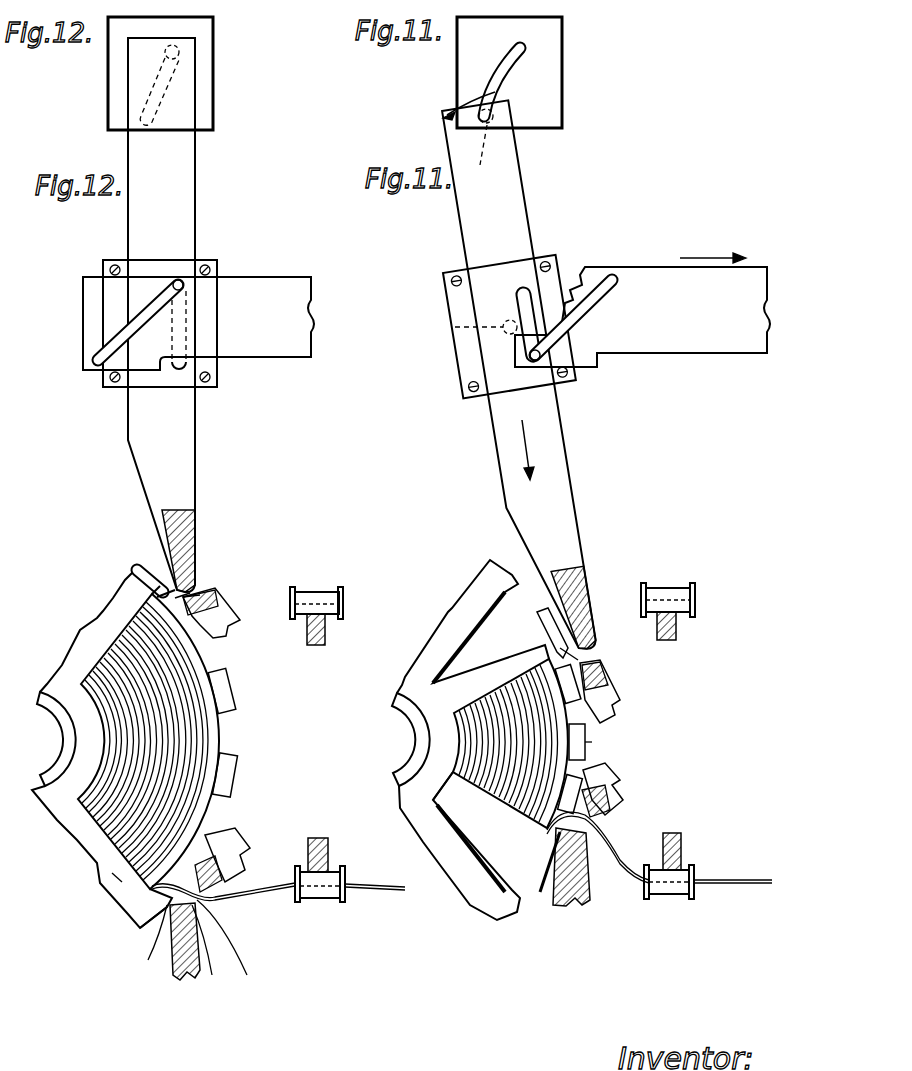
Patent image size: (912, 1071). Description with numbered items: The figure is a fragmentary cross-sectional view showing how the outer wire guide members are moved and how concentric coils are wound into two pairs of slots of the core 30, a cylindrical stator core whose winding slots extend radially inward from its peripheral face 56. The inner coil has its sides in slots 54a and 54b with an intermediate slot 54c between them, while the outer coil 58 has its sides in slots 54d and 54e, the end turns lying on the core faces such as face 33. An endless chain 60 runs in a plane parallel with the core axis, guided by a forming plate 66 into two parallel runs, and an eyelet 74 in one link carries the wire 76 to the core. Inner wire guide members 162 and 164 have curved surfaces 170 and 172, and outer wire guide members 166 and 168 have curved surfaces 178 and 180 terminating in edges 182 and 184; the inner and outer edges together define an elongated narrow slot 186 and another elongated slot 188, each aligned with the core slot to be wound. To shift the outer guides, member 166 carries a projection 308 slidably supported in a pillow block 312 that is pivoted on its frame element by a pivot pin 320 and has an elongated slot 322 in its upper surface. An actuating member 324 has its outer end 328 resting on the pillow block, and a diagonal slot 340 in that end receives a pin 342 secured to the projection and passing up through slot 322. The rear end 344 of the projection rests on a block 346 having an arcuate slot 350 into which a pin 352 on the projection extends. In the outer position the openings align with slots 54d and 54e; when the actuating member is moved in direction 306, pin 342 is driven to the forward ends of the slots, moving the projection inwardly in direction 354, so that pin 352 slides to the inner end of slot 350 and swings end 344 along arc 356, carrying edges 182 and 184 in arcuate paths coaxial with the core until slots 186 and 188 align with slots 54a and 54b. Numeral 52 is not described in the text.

In FIG. 12, the core 30 is at (68, 645).
In FIG. 11, the core 30 is at (430, 620).
In FIG. 12, the face of core 33 is at (115, 876).
In FIG. 11, the wheel arm 52 is at (497, 800).
In FIG. 11, the winding slot 54a is at (540, 632).
In FIG. 11, the winding slot 54b is at (552, 895).
In FIG. 11, the intermediate slot 54c is at (592, 748).
In FIG. 12, the winding slot 54d is at (125, 590).
In FIG. 12, the winding slot 54e is at (162, 915).
In FIG. 12, the peripheral face 56 is at (212, 673).
In FIG. 11, the peripheral face 56 is at (498, 922).
In FIG. 12, the outer coil 58 is at (120, 625).
In FIG. 12, the endless chain 60 is at (312, 590).
In FIG. 11, the endless chain 60 is at (697, 600).
In FIG. 12, the forming plate 66 is at (325, 630).
In FIG. 11, the forming plate 66 is at (676, 625).
In FIG. 12, the eyelet 74 is at (295, 902).
In FIG. 11, the eyelet 74 is at (667, 900).
In FIG. 12, the wire 76 is at (360, 895).
In FIG. 11, the wire 76 is at (727, 880).
In FIG. 12, the inner wire guide member 162 is at (220, 606).
In FIG. 11, the inner wire guide member 162 is at (615, 688).
In FIG. 12, the inner wire guide member 164 is at (215, 878).
In FIG. 11, the inner wire guide member 164 is at (615, 800).
In FIG. 12, the outer wire guide member 166 is at (200, 553).
In FIG. 11, the outer wire guide member 166 is at (583, 602).
In FIG. 12, the outer wire guide member 168 is at (184, 982).
In FIG. 11, the outer wire guide member 168 is at (592, 888).
In FIG. 11, the curved surface 170 is at (608, 680).
In FIG. 11, the curved surface 172 is at (610, 812).
In FIG. 12, the curved surface 178 is at (198, 590).
In FIG. 12, the curved surface 180 is at (212, 951).
In FIG. 12, the edge 182 is at (175, 590).
In FIG. 12, the edge 184 is at (160, 960).
In FIG. 12, the elongated narrow slot 186 is at (200, 598).
In FIG. 11, the elongated narrow slot 186 is at (585, 663).
In FIG. 12, the elongated slot 188 is at (237, 948).
In FIG. 11, the direction 306 is at (716, 258).
In FIG. 12, the projection 308 is at (197, 470).
In FIG. 11, the projection 308 is at (570, 468).
In FIG. 12, the pillow block 312 is at (112, 388).
In FIG. 11, the pillow block 312 is at (453, 365).
In FIG. 11, the pivot pin 320 is at (466, 329).
In FIG. 12, the elongated slot 322 is at (180, 370).
In FIG. 11, the elongated slot 322 is at (540, 300).
In FIG. 12, the actuating member 324 is at (283, 277).
In FIG. 11, the actuating member 324 is at (700, 355).
In FIG. 12, the outer end of actuating member 328 is at (83, 296).
In FIG. 12, the diagonal slot 340 is at (125, 330).
In FIG. 11, the diagonal slot 340 is at (598, 303).
In FIG. 12, the pin 342 is at (185, 292).
In FIG. 11, the pin 342 is at (560, 352).
In FIG. 12, the rear end of projection 344 is at (192, 80).
In FIG. 12, the block 346 is at (108, 84).
In FIG. 11, the arcuate slot 350 is at (505, 62).
In FIG. 11, the pin 352 is at (472, 147).
In FIG. 11, the direction 354 is at (522, 447).
In FIG. 11, the arc direction 356 is at (446, 97).